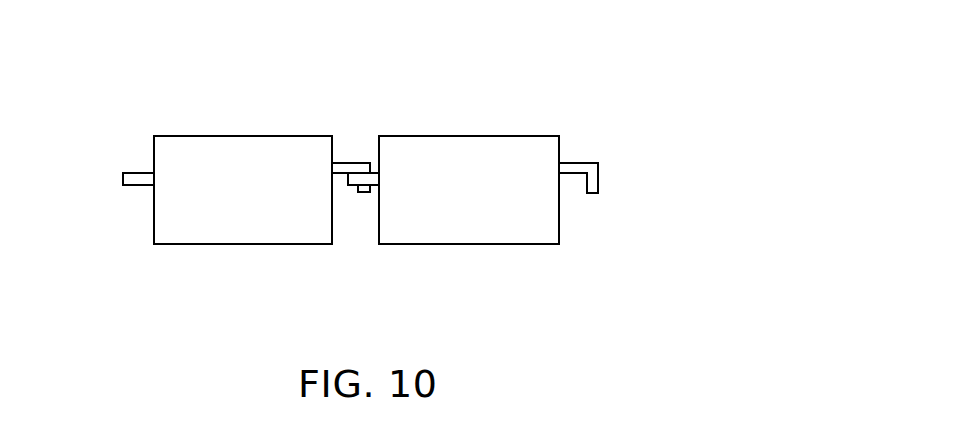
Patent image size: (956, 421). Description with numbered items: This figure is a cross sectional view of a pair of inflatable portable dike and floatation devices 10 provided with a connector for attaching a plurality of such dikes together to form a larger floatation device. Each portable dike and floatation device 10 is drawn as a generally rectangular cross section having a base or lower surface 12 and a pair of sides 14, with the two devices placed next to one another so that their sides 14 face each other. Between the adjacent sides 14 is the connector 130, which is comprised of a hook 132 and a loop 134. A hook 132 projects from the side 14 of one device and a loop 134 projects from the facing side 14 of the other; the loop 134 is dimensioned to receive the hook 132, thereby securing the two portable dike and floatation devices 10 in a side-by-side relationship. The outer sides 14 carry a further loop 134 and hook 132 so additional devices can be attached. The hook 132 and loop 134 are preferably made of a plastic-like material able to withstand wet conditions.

The portable dike and floatation device 10 is at (363, 175).
The base 12 is at (245, 245).
The sides 14 is at (153, 226).
The connector 130 is at (354, 151).
The hook 132 is at (333, 174).
The loop 134 is at (123, 179).